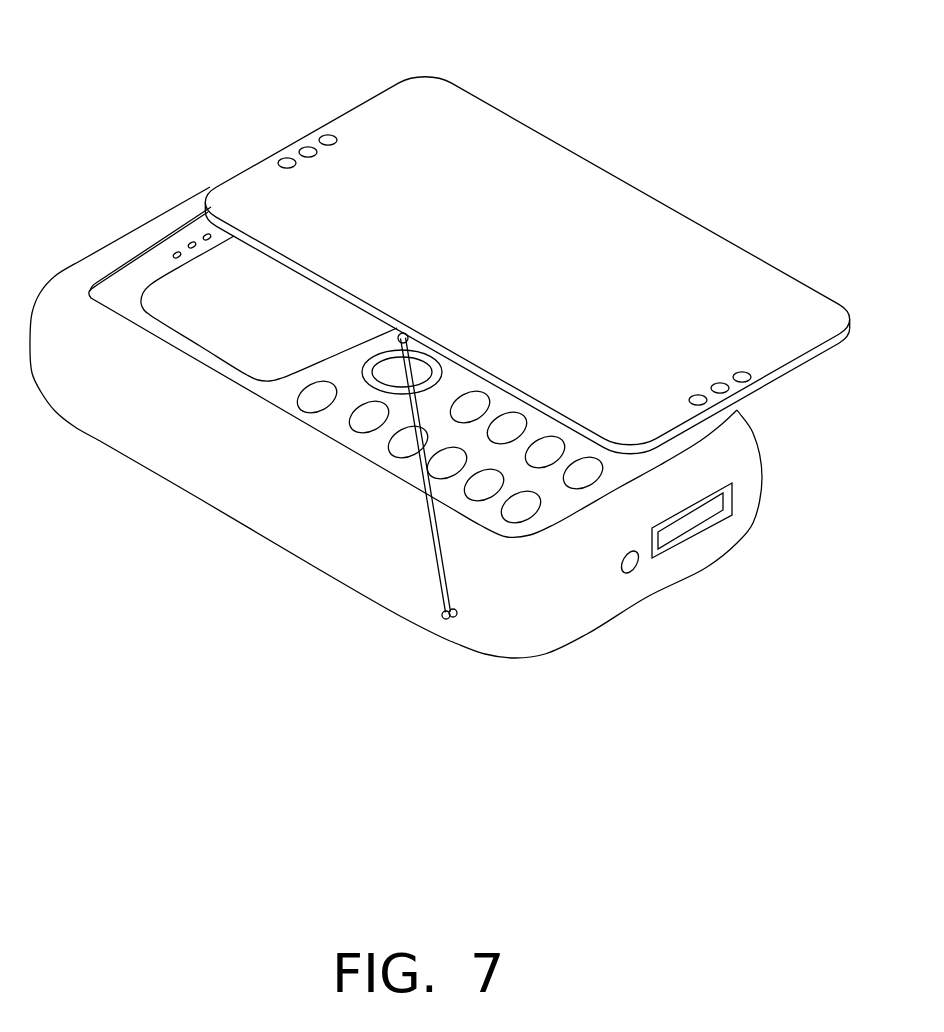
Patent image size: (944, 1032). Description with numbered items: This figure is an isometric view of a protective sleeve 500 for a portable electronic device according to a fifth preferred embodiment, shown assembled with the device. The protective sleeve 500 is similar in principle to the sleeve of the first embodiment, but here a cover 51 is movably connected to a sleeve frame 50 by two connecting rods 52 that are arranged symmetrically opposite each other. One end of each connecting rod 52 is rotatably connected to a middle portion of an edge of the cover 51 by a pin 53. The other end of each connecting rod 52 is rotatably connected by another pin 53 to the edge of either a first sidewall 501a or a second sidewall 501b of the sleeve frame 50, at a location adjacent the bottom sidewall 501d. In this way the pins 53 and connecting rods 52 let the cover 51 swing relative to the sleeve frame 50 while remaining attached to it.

The protective sleeve 500 is at (171, 81).
The sleeve frame 50 is at (98, 355).
The first sidewall 501a is at (217, 470).
The second sidewall 501b is at (776, 460).
The bottom sidewall 501d is at (555, 608).
The cover 51 is at (663, 242).
The connecting rod 52 is at (435, 538).
The pin 53 is at (443, 620).